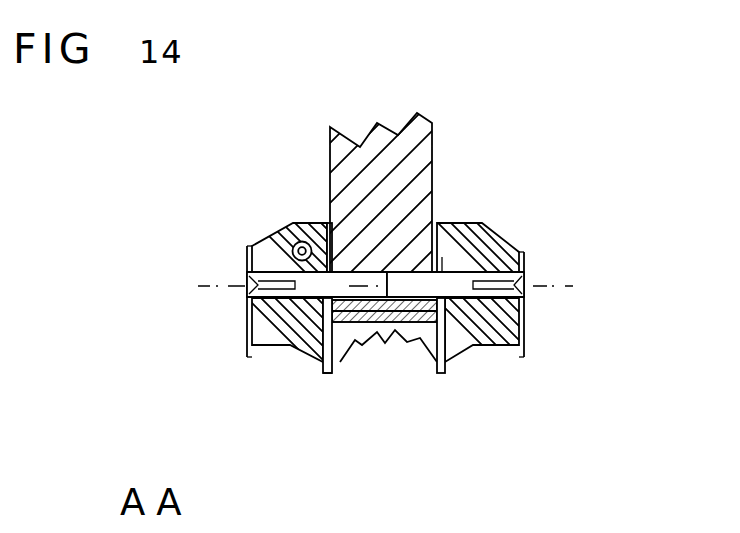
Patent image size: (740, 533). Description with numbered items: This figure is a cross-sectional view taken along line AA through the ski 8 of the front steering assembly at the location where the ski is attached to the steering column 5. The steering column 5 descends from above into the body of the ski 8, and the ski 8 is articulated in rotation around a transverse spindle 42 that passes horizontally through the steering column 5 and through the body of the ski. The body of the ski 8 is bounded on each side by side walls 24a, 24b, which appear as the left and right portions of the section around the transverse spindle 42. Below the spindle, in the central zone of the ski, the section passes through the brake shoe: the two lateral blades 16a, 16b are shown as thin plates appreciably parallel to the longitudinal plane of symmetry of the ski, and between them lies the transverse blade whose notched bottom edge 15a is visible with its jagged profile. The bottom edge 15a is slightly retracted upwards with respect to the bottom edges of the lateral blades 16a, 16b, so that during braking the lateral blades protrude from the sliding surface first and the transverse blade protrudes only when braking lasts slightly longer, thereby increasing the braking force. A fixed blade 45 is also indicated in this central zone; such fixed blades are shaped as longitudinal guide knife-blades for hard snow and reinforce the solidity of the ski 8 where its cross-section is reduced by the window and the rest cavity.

The steering column 5 is at (329, 190).
The ski 8 is at (542, 175).
The transverse spindle 42 is at (244, 280).
The side wall of the body of the ski 24a is at (236, 323).
The side wall of the body of the ski 24b is at (525, 343).
The fixed blade 45 is at (324, 379).
The notched bottom edge of the transverse blade 15a is at (385, 351).
The lateral blade 16a is at (339, 372).
The lateral blade 16b is at (442, 373).